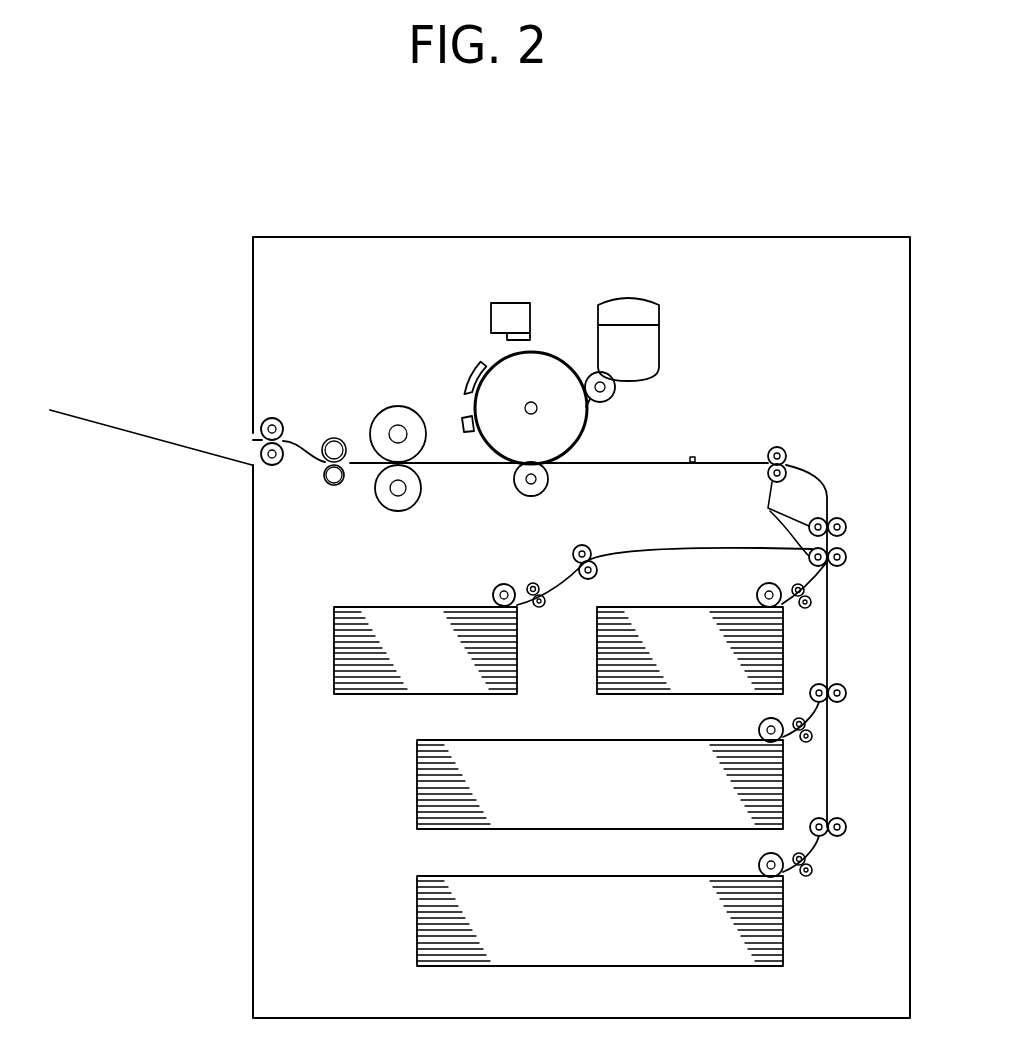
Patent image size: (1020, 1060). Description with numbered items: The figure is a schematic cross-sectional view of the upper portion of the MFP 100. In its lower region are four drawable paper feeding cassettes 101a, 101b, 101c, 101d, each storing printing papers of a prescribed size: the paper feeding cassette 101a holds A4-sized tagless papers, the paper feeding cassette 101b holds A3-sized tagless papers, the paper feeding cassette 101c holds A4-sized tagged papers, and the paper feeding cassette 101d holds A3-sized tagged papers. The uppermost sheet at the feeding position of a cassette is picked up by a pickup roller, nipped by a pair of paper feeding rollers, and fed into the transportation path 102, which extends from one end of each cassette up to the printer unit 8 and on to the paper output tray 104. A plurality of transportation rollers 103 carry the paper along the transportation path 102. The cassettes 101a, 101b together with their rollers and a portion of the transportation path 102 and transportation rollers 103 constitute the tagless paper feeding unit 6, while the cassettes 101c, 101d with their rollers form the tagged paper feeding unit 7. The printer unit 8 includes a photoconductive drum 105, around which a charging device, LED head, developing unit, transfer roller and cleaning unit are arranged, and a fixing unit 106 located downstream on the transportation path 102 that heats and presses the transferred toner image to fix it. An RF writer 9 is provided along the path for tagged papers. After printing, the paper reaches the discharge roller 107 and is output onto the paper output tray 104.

The MFP 100 is at (390, 171).
The printer unit 8 is at (437, 343).
The paper output tray 104 is at (140, 433).
The discharge roller 107 is at (280, 413).
The fixing unit 106 is at (381, 412).
The photoconductive drum 105 is at (573, 443).
The RF writer 9 is at (693, 457).
The transportation path 102 is at (815, 483).
The transportation rollers 103 is at (768, 508).
The paper feeding cassette 101a is at (700, 695).
The paper feeding cassette 101b is at (546, 830).
The paper feeding cassette 101c is at (435, 695).
The paper feeding cassette 101d is at (546, 967).
The tagless paper feeding unit 6 is at (560, 778).
The tagged paper feeding unit 7 is at (560, 778).